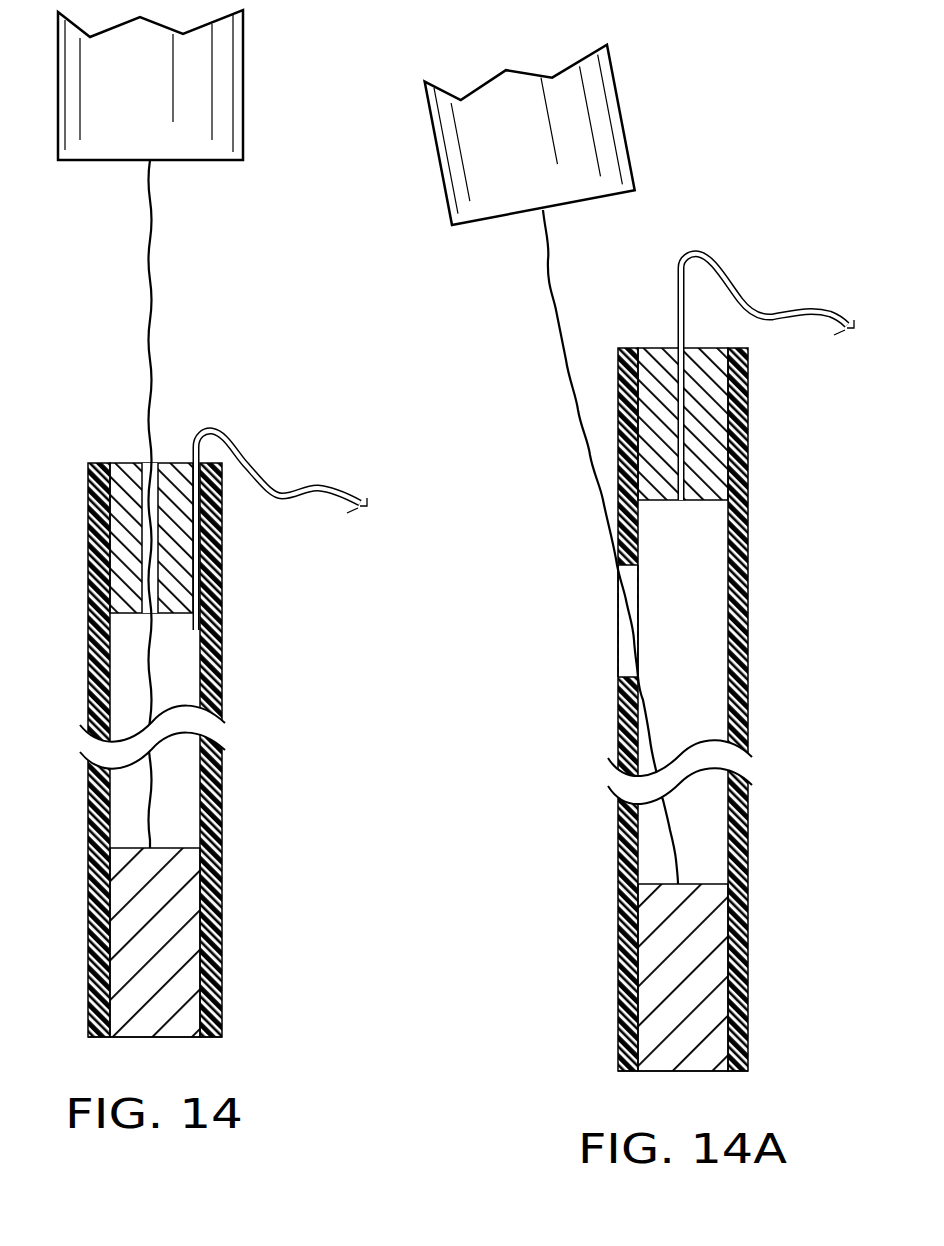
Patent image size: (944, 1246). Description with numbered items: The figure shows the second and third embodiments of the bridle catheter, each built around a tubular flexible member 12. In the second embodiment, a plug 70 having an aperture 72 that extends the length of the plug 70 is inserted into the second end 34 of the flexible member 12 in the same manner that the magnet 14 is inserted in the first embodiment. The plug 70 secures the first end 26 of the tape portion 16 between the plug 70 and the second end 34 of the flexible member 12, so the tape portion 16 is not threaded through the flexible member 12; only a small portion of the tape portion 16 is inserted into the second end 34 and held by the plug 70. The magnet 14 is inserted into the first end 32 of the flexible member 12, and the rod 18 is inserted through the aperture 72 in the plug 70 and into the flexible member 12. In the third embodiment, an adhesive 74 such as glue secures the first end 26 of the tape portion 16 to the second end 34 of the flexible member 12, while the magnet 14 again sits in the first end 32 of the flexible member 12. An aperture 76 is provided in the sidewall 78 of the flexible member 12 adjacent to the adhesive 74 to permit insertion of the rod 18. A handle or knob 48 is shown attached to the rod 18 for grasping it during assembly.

In FIG. 14, the flexible member 12 is at (223, 803).
In FIG. 14A, the flexible member 12 is at (749, 838).
In FIG. 14, the magnet 14 is at (170, 893).
In FIG. 14A, the magnet 14 is at (698, 928).
In FIG. 14, the tape portion 16 is at (295, 493).
In FIG. 14A, the tape portion 16 is at (780, 312).
In FIG. 14, the rod 18 is at (150, 290).
In FIG. 14A, the rod 18 is at (647, 715).
In FIG. 14, the first end of the tape portion 26 is at (198, 583).
In FIG. 14A, the first end of the tape portion 26 is at (685, 470).
In FIG. 14, the first end of the flexible member 32 is at (223, 967).
In FIG. 14A, the first end of the flexible member 32 is at (750, 1000).
In FIG. 14, the second end of the flexible member 34 is at (222, 528).
In FIG. 14A, the second end of the flexible member 34 is at (748, 410).
In FIG. 14A, the handle or knob 48 is at (452, 163).
In FIG. 14, the plug 70 is at (118, 517).
In FIG. 14, the aperture 72 is at (140, 567).
In FIG. 14A, the adhesive 74 is at (715, 385).
In FIG. 14A, the aperture 76 is at (617, 643).
In FIG. 14A, the sidewall 78 is at (617, 700).